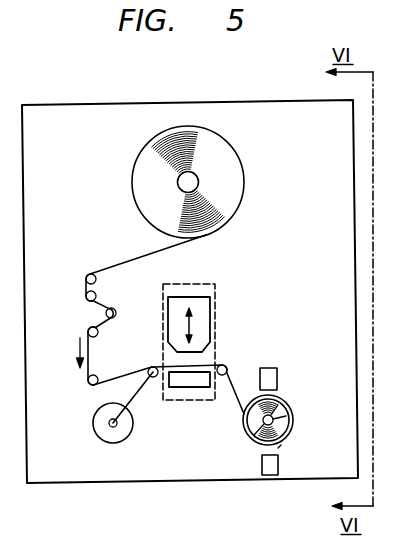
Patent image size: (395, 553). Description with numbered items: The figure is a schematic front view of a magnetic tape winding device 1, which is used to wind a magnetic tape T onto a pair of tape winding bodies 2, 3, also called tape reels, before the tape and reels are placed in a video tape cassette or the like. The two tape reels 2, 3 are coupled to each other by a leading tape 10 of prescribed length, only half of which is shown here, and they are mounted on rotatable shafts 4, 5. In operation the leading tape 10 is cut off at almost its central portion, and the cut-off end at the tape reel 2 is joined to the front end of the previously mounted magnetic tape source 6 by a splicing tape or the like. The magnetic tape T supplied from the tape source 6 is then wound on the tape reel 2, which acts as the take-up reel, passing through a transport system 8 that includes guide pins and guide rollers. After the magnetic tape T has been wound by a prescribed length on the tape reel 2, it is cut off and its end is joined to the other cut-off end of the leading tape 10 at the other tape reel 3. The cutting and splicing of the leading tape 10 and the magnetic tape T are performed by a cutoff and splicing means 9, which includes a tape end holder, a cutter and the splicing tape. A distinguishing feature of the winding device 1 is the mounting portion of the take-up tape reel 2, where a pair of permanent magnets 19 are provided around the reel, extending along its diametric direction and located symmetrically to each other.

The magnetic tape winding device 1 is at (247, 101).
The tape winding body 2 is at (287, 401).
The tape winding body 3 is at (93, 435).
The shaft 4 is at (273, 419).
The shaft 5 is at (116, 427).
The magnetic tape source 6 is at (243, 183).
The transport system 8 is at (83, 291).
The cutoff and splicing means 9 is at (217, 318).
The leading tape 10 is at (137, 390).
The permanent magnets 19 is at (270, 368).
The magnetic tape T is at (132, 247).